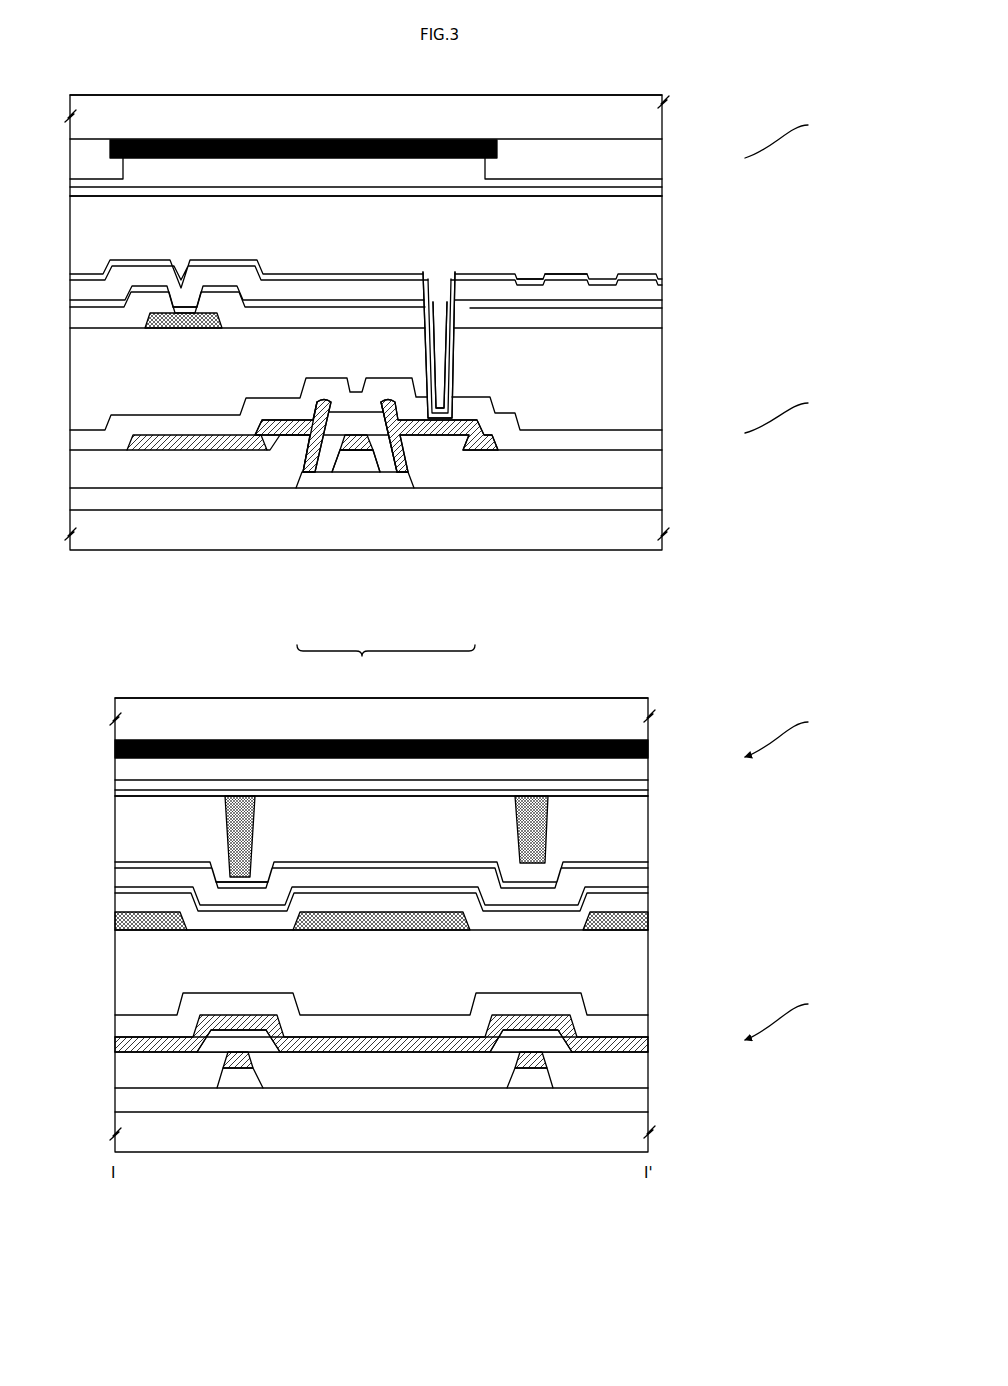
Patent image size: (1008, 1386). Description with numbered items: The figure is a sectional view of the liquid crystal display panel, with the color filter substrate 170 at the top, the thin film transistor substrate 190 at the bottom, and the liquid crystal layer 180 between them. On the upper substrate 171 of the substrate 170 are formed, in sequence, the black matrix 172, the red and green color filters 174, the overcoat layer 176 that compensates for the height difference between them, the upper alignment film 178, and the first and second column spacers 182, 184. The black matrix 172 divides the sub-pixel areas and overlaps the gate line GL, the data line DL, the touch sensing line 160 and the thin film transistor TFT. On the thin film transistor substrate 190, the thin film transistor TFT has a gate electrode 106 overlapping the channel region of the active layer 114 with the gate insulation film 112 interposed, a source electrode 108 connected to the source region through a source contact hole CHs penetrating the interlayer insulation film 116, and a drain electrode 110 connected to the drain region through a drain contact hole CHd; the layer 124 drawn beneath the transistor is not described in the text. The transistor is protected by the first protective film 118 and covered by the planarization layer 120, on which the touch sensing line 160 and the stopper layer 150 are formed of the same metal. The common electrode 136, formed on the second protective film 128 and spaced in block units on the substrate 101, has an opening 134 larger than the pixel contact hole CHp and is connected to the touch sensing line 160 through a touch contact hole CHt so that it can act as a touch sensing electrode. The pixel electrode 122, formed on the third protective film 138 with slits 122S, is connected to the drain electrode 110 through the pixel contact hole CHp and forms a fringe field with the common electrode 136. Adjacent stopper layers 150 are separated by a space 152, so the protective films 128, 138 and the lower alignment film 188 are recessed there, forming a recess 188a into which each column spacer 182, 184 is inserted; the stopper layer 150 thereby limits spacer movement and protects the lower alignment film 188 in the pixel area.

The substrate 101 is at (674, 1145).
The buffer layer 124 is at (674, 1102).
The active layer 114 is at (362, 480).
The gate electrode 106 is at (378, 444).
The source electrode 108 is at (282, 440).
The drain electrode 110 is at (451, 440).
The gate insulation film 112 is at (240, 1072).
The interlayer insulation film 116 is at (674, 1073).
The first protective film 118 is at (674, 1025).
The planarization layer 120 is at (674, 968).
The second protective film 128 is at (674, 905).
The common electrode 136 is at (674, 890).
The third protective film 138 is at (674, 872).
The stopper layer 150 is at (650, 925).
The space 152 is at (187, 915).
The touch sensing line 160 is at (205, 300).
The pixel electrode 122 is at (561, 271).
The slits 122S is at (530, 274).
The opening 134 is at (413, 296).
The lower alignment film 188 is at (674, 850).
The recess 188a is at (259, 862).
The liquid crystal layer 180 is at (674, 833).
The upper alignment film 178 is at (674, 807).
The overcoat layer 176 is at (674, 785).
The color filters 174 is at (674, 770).
The black matrix 172 is at (674, 750).
The upper substrate 171 is at (674, 708).
The substrate including a color filter 170 is at (793, 435).
The thin film transistor substrate 190 is at (793, 715).
The first column spacer 182 is at (228, 820).
The second column spacer 184 is at (545, 830).
The touch contact hole CHt is at (179, 296).
The pixel contact hole CHp is at (442, 296).
The source contact hole CHs is at (306, 430).
The drain contact hole CHd is at (400, 432).
The data line DL is at (674, 1045).
The gate line GL is at (530, 1072).
The thin film transistor TFT is at (386, 662).